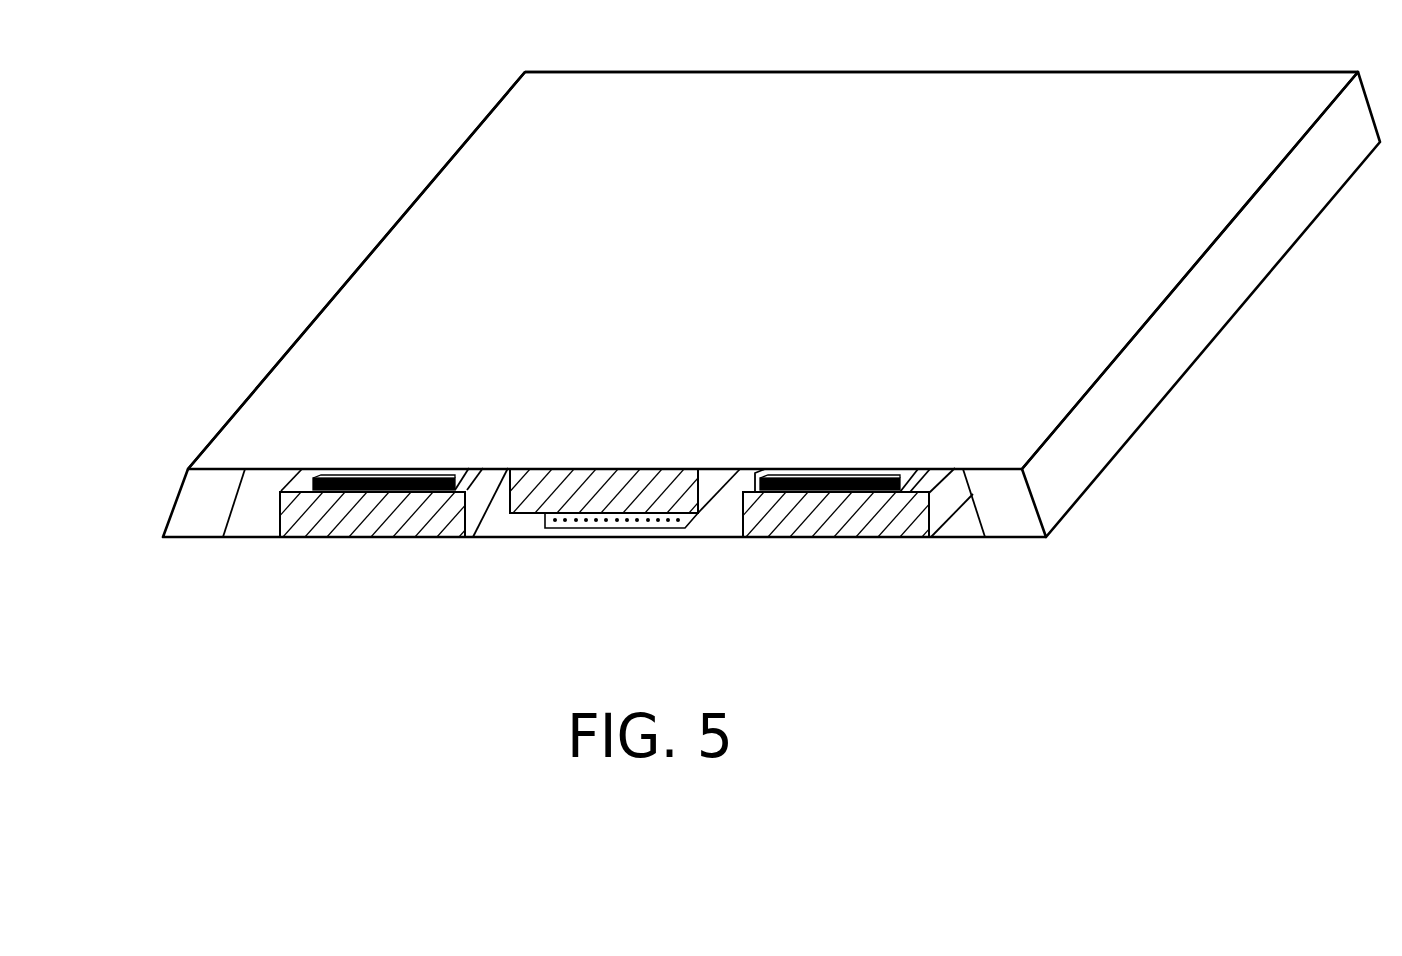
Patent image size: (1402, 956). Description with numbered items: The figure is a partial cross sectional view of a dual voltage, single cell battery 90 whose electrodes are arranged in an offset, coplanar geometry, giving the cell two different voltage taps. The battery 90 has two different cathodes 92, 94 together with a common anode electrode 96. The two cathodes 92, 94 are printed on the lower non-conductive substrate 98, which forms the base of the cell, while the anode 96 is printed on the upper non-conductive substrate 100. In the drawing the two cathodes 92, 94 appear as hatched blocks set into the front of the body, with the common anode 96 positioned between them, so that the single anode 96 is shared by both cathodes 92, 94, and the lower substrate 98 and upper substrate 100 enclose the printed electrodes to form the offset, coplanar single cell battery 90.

The dual voltage, single cell battery 90 is at (246, 206).
The cathode 92 is at (880, 527).
The cathode 94 is at (397, 540).
The common anode electrode 96 is at (523, 514).
The lower non-conductive substrate 98 is at (252, 540).
The upper non-conductive substrate 100 is at (280, 423).